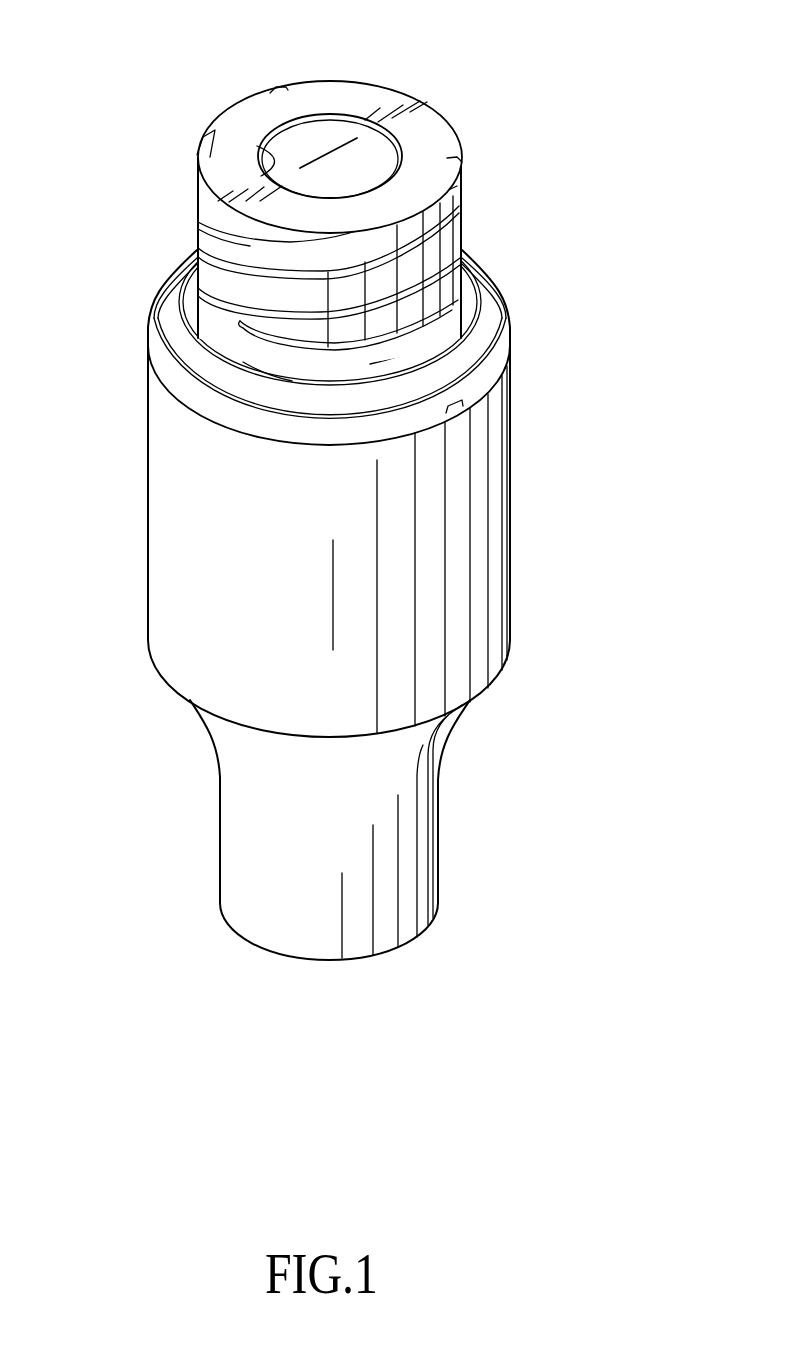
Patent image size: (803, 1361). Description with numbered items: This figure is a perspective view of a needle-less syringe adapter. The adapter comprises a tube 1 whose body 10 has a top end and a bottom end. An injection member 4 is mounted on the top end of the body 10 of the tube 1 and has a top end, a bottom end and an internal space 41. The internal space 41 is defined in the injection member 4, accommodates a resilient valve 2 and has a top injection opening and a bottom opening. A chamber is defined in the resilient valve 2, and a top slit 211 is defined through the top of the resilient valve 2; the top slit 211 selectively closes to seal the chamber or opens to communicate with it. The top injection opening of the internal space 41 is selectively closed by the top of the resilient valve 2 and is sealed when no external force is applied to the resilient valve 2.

The tube 1 is at (374, 486).
The body 10 is at (510, 598).
The injection member 4 is at (326, 188).
The resilient valve 2 is at (298, 125).
The top slit 211 is at (342, 143).
The internal space 41 is at (280, 160).